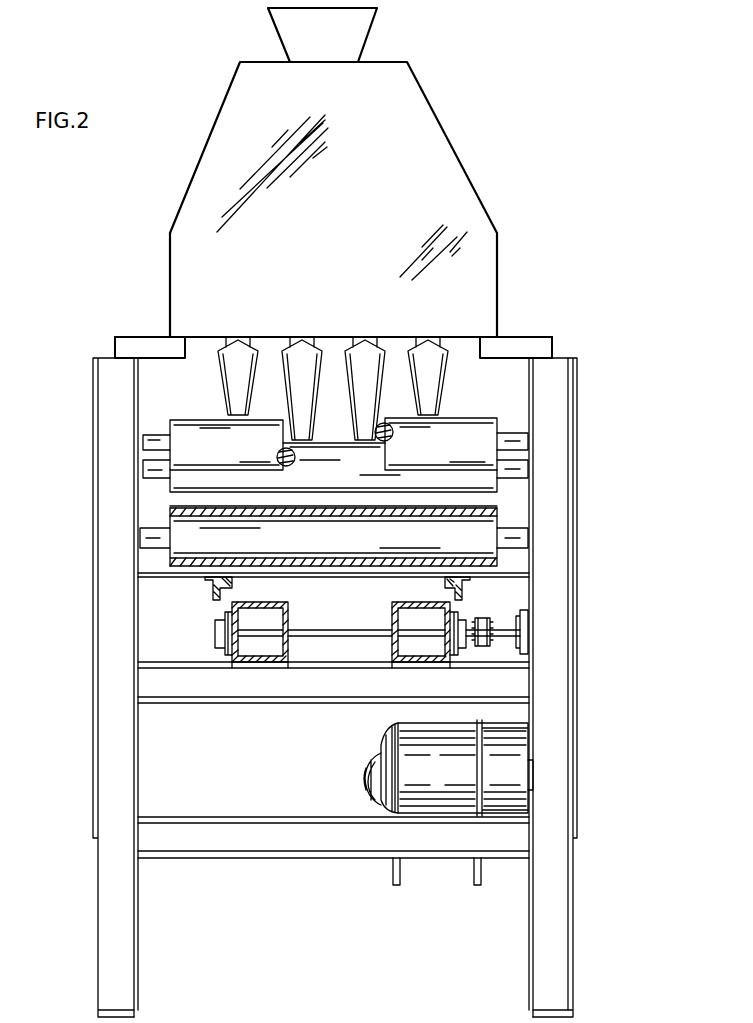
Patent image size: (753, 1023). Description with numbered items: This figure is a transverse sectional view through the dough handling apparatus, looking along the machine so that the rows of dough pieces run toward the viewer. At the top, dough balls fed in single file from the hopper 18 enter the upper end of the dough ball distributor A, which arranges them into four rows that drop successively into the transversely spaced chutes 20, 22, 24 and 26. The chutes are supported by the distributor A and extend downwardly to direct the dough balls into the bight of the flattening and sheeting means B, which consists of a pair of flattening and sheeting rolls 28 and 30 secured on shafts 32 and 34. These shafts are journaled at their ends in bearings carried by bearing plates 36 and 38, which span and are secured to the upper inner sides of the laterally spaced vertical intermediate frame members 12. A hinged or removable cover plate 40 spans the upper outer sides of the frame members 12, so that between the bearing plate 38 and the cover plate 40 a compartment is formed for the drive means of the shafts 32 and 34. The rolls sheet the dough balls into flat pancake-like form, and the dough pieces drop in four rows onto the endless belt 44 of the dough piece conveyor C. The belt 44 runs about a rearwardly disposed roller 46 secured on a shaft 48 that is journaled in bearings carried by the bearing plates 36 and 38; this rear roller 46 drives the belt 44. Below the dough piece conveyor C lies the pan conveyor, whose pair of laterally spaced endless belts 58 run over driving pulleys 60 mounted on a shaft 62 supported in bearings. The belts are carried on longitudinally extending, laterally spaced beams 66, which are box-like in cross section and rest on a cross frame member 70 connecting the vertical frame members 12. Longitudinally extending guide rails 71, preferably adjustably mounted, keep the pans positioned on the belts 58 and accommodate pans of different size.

The dough ball distributor A is at (433, 93).
The flattening and sheeting means B is at (159, 418).
The dough piece conveyor C is at (502, 512).
The intermediate vertical frame members 12 is at (94, 757).
The hopper 18 is at (370, 37).
The chute 20 is at (224, 395).
The chute 22 is at (288, 402).
The chute 24 is at (353, 413).
The chute 26 is at (418, 396).
The flattening and sheeting roll 28 is at (436, 444).
The flattening and sheeting roll 30 is at (333, 467).
The sheeting roll shaft 32 is at (527, 436).
The sheeting roll shaft 34 is at (527, 462).
The bearing plate 36 is at (139, 392).
The bearing plate 38 is at (528, 393).
The cover plate 40 is at (574, 577).
The endless belt 44 is at (180, 508).
The rearwardly disposed roller 46 is at (318, 537).
The shaft 48 is at (515, 528).
The endless belts 58 is at (268, 601).
The driving pulleys 60 is at (224, 612).
The shaft 62 is at (320, 630).
The beams 66 is at (290, 650).
The cross frame member 70 is at (272, 703).
The guide rails 71 is at (211, 593).